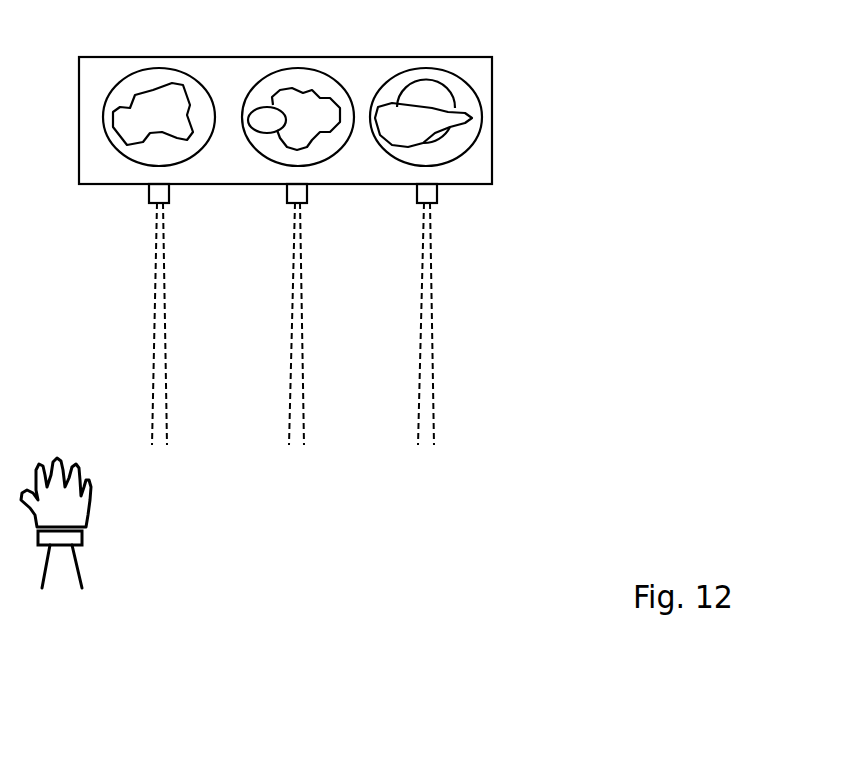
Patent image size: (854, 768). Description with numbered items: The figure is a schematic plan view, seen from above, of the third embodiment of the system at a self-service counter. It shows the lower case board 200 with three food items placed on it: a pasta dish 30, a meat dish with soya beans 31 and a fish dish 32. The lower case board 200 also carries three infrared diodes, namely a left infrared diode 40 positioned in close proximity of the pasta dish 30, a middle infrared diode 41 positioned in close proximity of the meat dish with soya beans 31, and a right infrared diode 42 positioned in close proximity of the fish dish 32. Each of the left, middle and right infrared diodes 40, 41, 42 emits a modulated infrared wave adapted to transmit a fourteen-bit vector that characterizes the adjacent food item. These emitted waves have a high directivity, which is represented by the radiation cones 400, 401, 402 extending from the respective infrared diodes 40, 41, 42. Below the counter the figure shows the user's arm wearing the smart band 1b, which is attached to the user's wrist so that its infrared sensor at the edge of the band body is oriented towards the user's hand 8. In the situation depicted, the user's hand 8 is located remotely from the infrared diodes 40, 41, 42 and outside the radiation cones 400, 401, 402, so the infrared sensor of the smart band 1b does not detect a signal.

The lower case board 200 is at (492, 155).
The pasta dish 30 is at (158, 108).
The meat dish with soya beans 31 is at (299, 115).
The fish dish 32 is at (414, 115).
The left infrared diode 40 is at (148, 197).
The middle infrared diode 41 is at (286, 197).
The right infrared diode 42 is at (416, 197).
The radiation cone 400 is at (151, 300).
The radiation cone 401 is at (288, 330).
The radiation cone 402 is at (421, 322).
The user's hand 8 is at (78, 505).
The smart band 1b is at (85, 541).